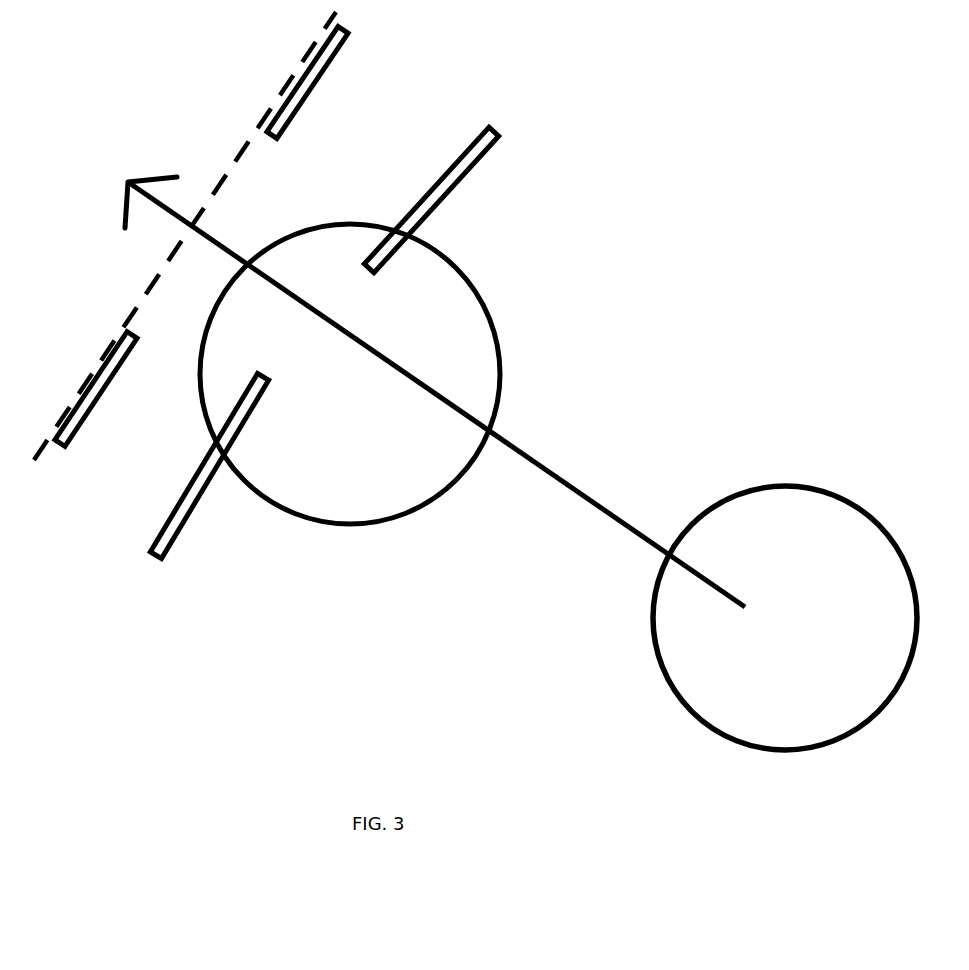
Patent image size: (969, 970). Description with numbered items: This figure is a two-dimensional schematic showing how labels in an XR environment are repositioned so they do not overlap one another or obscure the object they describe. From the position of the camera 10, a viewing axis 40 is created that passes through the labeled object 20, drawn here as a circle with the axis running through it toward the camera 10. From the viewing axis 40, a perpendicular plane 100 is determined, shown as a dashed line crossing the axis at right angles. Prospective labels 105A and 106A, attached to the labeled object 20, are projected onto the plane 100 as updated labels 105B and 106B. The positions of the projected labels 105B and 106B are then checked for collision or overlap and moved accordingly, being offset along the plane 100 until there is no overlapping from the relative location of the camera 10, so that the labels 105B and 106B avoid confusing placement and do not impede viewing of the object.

The camera 10 is at (783, 527).
The labeled object 20 is at (356, 493).
The viewing axis 40 is at (560, 477).
The perpendicular plane 100 is at (248, 143).
The prospective label 105A is at (498, 142).
The updated label 105B is at (350, 33).
The prospective label 106A is at (170, 548).
The updated label 106B is at (77, 447).